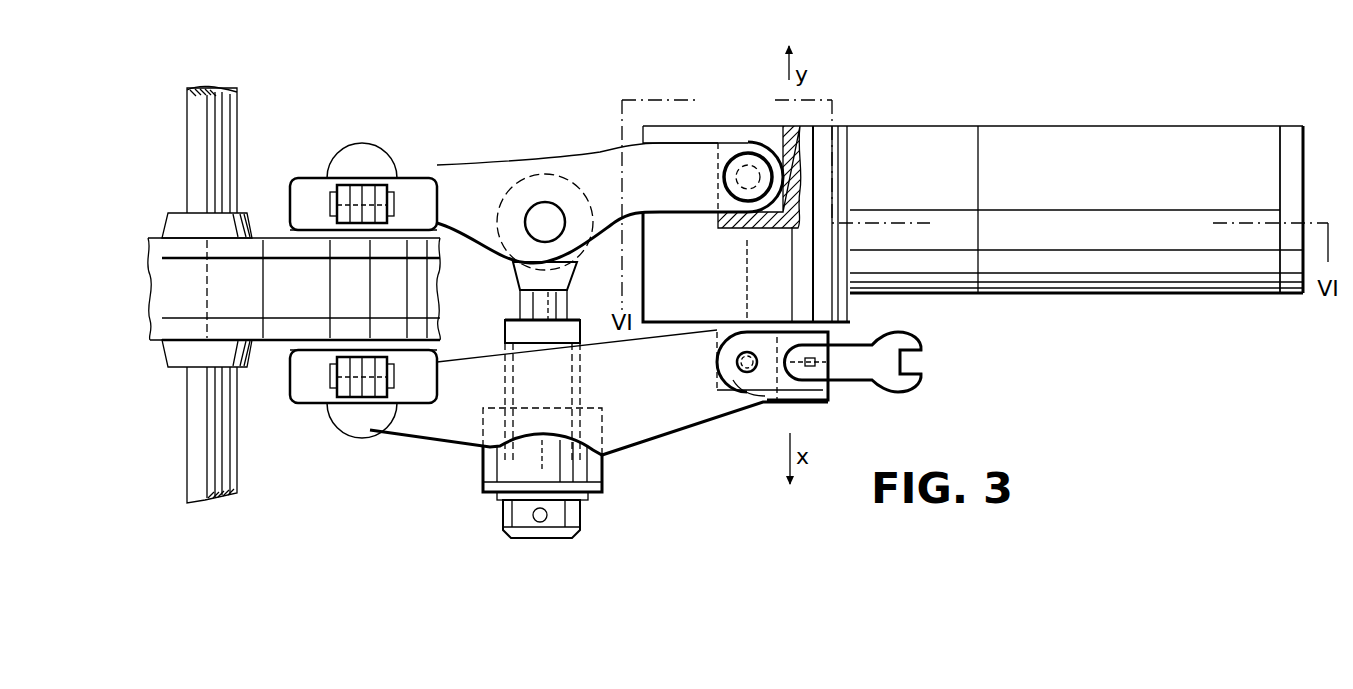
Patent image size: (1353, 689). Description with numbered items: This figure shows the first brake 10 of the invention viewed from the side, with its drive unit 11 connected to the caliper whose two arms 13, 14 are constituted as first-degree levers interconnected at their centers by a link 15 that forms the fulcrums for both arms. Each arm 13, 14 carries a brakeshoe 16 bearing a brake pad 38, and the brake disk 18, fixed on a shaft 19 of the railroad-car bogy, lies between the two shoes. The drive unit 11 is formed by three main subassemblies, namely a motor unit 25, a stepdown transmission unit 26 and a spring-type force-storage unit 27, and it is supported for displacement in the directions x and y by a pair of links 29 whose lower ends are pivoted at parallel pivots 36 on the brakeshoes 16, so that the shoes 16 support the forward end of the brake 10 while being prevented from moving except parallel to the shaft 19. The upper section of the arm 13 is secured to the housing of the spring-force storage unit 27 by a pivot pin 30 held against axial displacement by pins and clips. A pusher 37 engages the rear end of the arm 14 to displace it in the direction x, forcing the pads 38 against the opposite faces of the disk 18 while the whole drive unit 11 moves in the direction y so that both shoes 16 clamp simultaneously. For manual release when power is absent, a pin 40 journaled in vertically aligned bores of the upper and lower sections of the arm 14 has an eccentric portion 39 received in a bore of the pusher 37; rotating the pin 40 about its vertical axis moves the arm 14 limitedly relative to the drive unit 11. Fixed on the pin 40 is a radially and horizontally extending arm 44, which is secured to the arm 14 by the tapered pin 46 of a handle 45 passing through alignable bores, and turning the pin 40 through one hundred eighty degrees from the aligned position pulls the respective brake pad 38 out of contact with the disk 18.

The brake 10 is at (594, 108).
The drive unit 11 is at (1108, 120).
The arm 13 is at (510, 158).
The arm 14 is at (440, 442).
The link 15 is at (512, 336).
The brakeshoe 16 is at (313, 207).
The brake disk 18 is at (167, 287).
The shaft 19 is at (218, 138).
The motor unit 25 is at (1164, 122).
The stepdown transmission unit 26 is at (962, 122).
The spring-type force-storage unit 27 is at (840, 125).
The link 29 is at (360, 190).
The pivot pin 30 is at (748, 165).
The pivot 36 is at (383, 192).
The pusher 37 is at (745, 331).
The brake pad 38 is at (297, 231).
The eccentric portion 39 is at (755, 366).
The pin 40 is at (733, 380).
The arm 44 is at (830, 345).
The handle 45 is at (912, 353).
The tapered pin 46 is at (810, 372).